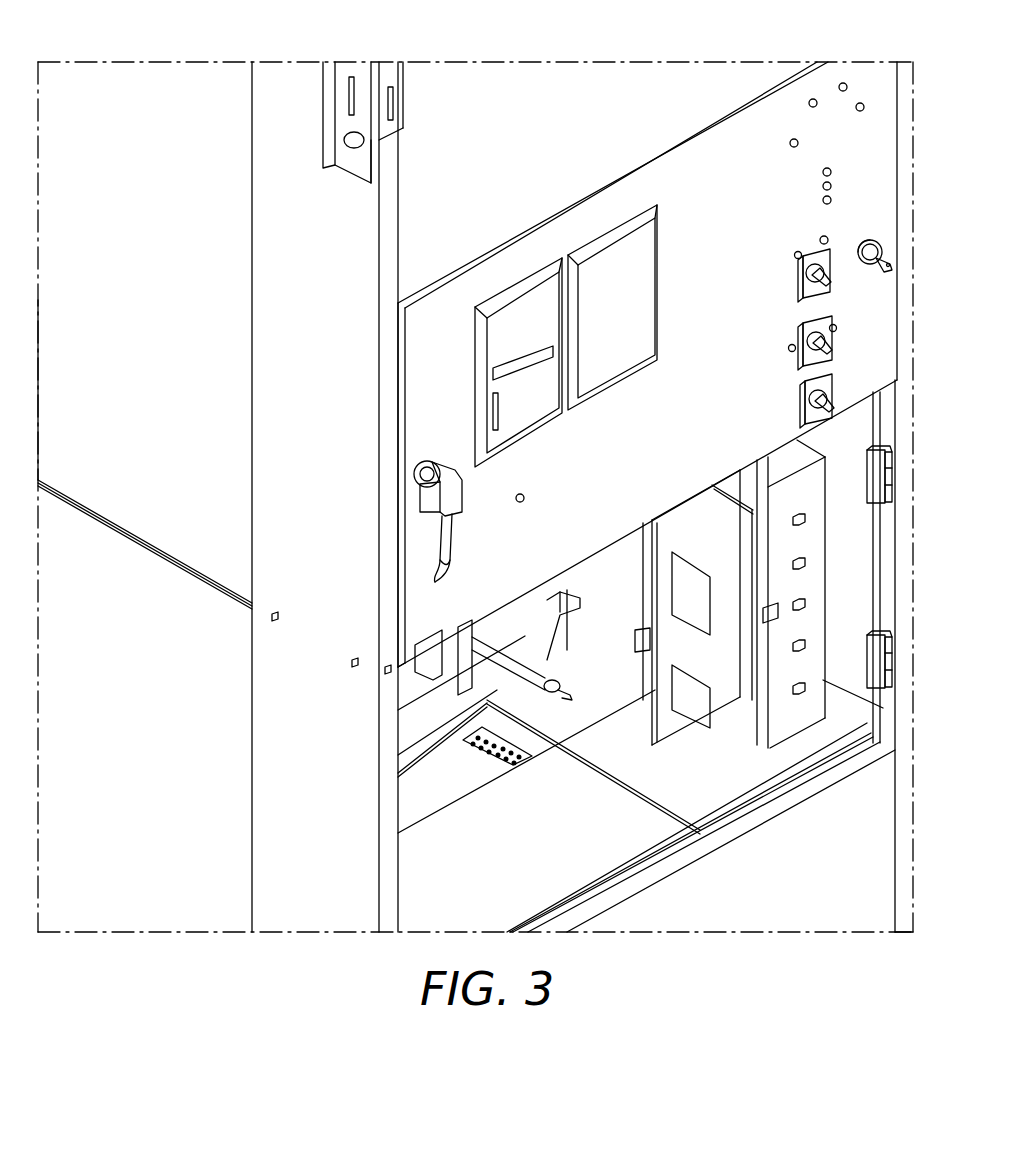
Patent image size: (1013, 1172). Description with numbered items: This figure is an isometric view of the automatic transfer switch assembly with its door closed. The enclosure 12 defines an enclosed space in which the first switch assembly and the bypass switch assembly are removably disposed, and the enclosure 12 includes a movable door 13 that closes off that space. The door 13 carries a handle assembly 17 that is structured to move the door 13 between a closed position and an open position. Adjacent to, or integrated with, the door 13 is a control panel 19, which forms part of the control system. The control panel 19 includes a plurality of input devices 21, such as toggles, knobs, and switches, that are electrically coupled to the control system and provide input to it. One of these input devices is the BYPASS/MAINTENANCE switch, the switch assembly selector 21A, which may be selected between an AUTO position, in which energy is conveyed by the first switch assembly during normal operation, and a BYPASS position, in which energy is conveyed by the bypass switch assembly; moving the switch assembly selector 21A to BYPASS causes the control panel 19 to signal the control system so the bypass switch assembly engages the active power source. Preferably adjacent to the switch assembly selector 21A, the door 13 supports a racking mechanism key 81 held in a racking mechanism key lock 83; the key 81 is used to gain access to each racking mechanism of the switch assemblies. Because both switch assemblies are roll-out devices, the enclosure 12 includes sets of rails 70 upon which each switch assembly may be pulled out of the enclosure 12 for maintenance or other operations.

The enclosure 12 is at (287, 917).
The door 13 is at (877, 108).
The handle assembly 17 is at (450, 465).
The control panel 19 is at (612, 140).
The input device 21 is at (785, 298).
The switch assembly selector 21A is at (797, 272).
The rails 70 is at (632, 784).
The racking mechanism key 81 is at (883, 238).
The racking mechanism key lock 83 is at (882, 270).